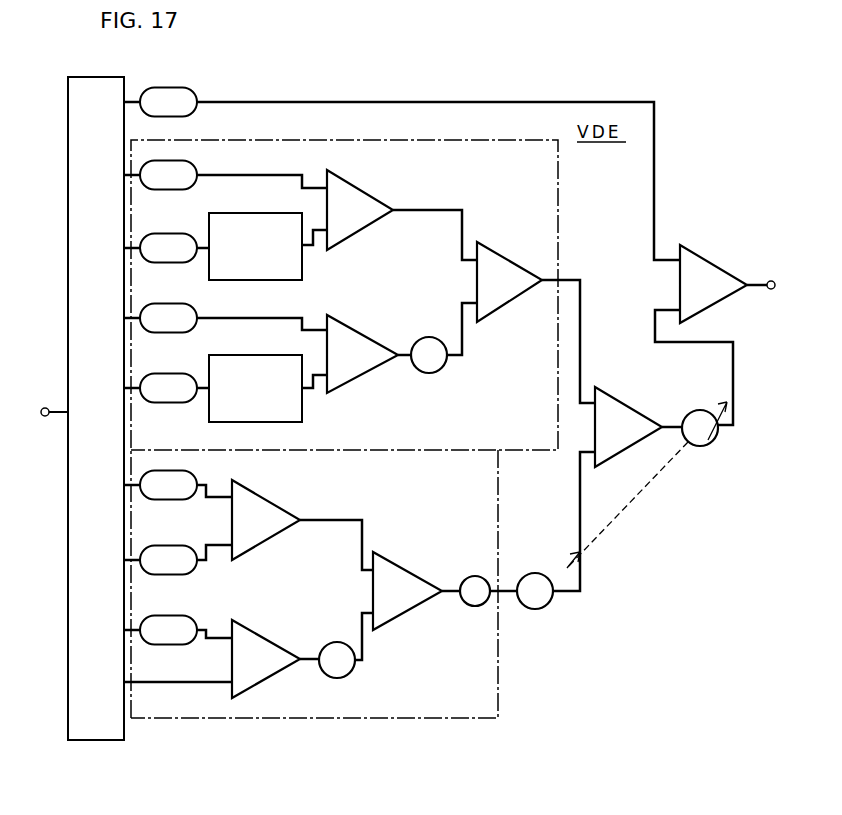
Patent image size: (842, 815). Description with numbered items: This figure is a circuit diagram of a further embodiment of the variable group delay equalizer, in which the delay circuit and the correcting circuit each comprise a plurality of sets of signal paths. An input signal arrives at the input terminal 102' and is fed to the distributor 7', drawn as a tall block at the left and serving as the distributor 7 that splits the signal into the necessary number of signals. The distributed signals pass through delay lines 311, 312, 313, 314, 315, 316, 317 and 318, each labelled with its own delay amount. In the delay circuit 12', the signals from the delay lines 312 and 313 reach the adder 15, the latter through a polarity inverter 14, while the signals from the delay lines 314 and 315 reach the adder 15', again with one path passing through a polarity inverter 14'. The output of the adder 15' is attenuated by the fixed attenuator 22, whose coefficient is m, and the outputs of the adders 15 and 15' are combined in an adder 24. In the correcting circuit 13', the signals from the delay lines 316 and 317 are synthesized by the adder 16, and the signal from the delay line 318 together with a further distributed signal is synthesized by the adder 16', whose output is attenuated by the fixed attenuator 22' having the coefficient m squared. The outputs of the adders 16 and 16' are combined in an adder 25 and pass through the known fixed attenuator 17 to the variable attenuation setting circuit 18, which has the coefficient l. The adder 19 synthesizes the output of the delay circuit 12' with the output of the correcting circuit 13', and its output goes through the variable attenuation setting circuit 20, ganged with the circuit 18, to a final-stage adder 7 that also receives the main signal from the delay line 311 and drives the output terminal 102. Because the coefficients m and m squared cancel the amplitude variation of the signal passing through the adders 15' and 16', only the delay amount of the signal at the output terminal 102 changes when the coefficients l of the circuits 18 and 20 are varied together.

The 4T delay element 311 is at (172, 88).
The 5T delay element 312 is at (175, 161).
The 3T delay element 313 is at (158, 233).
The 6T delay element 314 is at (175, 304).
The 2T delay element 315 is at (158, 373).
The 6T delay element 316 is at (175, 471).
The 2T delay element 317 is at (158, 545).
The 8T delay element 318 is at (175, 616).
The polarity inverter 14 is at (276, 257).
The polarity inverter 14' is at (278, 393).
The adder 15 is at (402, 214).
The adder 15' is at (369, 350).
The fixed attenuator 22 is at (444, 348).
The fixed attenuator 22' is at (357, 654).
The adder 24 is at (498, 252).
The adder 25 is at (405, 563).
The adder 16 is at (302, 522).
The adder 16' is at (275, 655).
The fixed attenuator 17 is at (475, 606).
The variable attenuation setting circuit 18 is at (548, 604).
The adder 19 is at (625, 402).
The variable attenuation setting circuit 20 is at (707, 447).
The distributor 7 is at (711, 331).
The distributor 7' is at (96, 430).
The vertical detail enhancer circuit 12' is at (370, 429).
The correcting circuit 13' is at (349, 585).
The output terminal 102 is at (761, 301).
The input terminal 102' is at (47, 426).